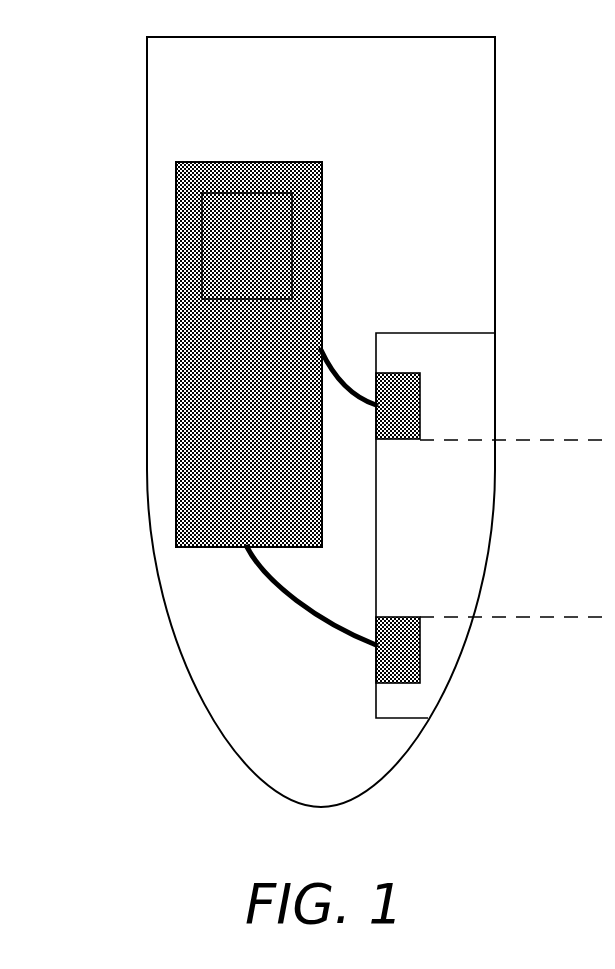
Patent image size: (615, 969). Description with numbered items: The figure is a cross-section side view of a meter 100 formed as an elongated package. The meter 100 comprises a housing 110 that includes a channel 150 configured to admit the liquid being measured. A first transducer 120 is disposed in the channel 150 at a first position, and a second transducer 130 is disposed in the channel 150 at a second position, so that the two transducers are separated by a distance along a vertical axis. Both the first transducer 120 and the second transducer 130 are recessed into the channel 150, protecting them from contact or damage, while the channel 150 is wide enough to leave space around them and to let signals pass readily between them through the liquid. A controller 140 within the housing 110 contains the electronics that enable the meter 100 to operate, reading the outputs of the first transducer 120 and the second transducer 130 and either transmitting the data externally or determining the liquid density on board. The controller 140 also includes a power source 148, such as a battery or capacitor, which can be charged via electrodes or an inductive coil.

The meter 100 is at (480, 20).
The housing 110 is at (307, 112).
The first transducer 120 is at (385, 658).
The second transducer 130 is at (385, 417).
The controller 140 is at (236, 380).
The power source 148 is at (234, 283).
The channel 150 is at (422, 554).